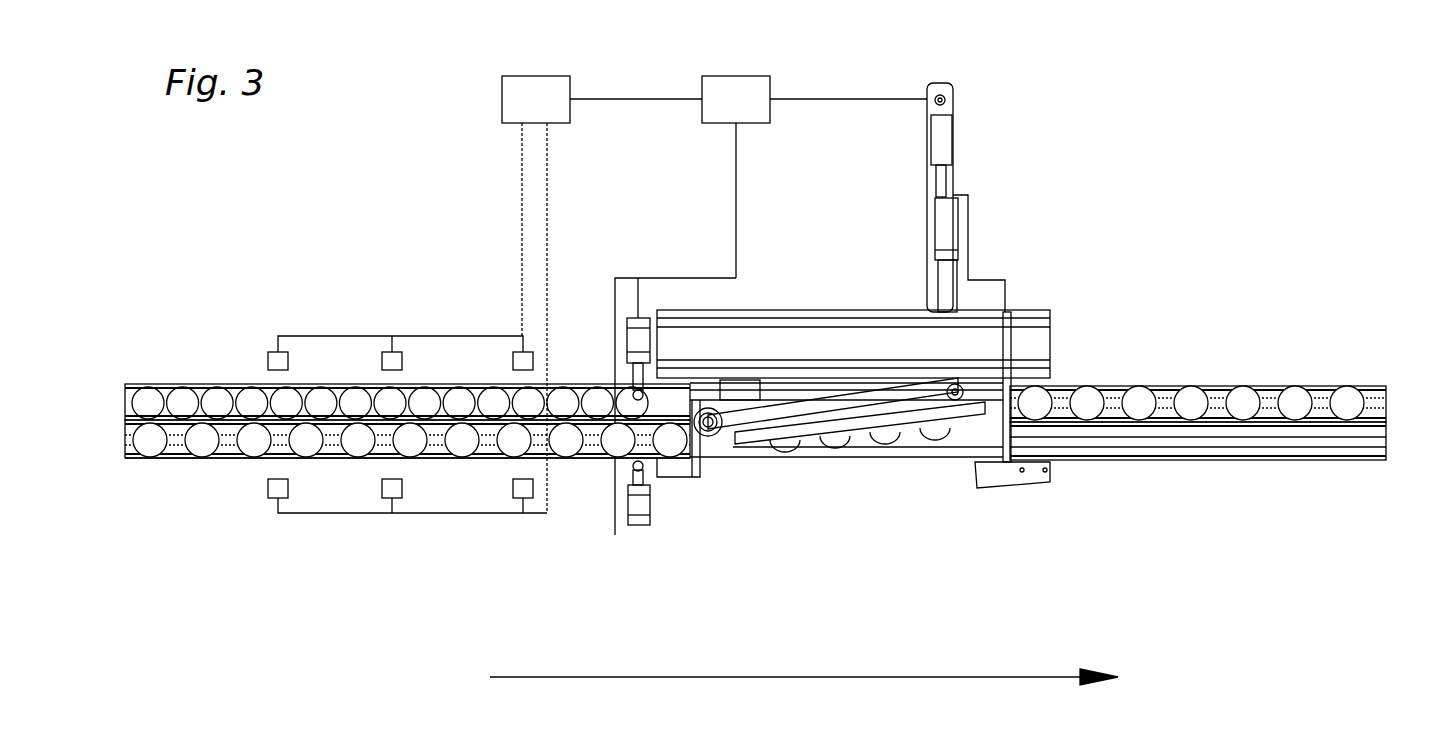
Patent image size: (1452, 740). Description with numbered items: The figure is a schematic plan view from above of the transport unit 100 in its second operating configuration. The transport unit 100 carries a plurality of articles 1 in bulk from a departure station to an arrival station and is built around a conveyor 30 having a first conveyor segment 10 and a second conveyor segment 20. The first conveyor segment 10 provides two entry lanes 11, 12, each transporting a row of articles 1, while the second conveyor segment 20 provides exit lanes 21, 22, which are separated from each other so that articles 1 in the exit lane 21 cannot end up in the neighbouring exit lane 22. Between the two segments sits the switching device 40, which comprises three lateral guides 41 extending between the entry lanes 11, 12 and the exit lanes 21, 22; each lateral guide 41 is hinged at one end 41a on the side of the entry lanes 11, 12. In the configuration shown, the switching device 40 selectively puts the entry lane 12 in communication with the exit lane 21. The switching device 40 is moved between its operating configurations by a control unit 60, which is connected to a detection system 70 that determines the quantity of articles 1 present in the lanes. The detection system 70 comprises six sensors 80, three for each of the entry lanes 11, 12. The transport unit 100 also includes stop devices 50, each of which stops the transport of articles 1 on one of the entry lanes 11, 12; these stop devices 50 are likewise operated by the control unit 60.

The article 1 is at (217, 396).
The first conveyor segment 10 is at (236, 462).
The entry lane 11 is at (125, 405).
The entry lane 12 is at (125, 438).
The second conveyor segment 20 is at (1150, 465).
The exit lane 21 is at (1386, 402).
The exit lane 22 is at (1386, 447).
The conveyor 30 is at (180, 468).
The switching device 40 is at (984, 255).
The lateral guide 41 is at (900, 440).
The hinged end of lateral guide 41a is at (712, 455).
The stop device 50 is at (626, 340).
The control unit 60 is at (726, 76).
The detection system 70 is at (520, 76).
The sensor 80 is at (523, 365).
The transport unit 100 is at (452, 260).